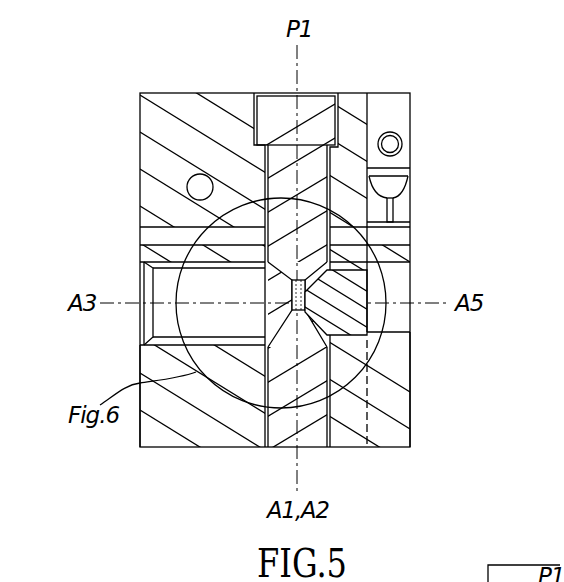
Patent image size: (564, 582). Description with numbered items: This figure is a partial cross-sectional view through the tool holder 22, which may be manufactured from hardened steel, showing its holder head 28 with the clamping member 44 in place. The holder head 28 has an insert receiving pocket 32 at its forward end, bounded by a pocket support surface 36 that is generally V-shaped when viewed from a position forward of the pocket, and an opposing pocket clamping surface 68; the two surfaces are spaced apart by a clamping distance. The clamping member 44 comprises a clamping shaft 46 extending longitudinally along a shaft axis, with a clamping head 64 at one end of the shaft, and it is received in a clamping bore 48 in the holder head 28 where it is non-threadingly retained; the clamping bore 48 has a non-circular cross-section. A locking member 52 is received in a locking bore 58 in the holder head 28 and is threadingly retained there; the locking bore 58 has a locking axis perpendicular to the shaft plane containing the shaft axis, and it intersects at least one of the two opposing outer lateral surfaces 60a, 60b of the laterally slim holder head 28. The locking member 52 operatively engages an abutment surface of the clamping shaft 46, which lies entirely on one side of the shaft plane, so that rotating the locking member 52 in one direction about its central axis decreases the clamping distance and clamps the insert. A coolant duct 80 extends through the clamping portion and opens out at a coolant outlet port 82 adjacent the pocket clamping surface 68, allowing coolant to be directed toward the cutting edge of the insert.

The tool holder 22 is at (424, 90).
The holder head 28 is at (163, 138).
The insert receiving pocket 32 is at (398, 239).
The pocket support surface 36 is at (408, 258).
The clamping member 44 is at (307, 100).
The clamping shaft 46 is at (285, 168).
The clamping bore 48 is at (283, 425).
The locking member 52 is at (347, 320).
The locking bore 58 is at (164, 284).
The outer lateral surface 60a is at (410, 347).
The outer lateral surface 60b is at (140, 362).
The clamping head 64 is at (318, 114).
The pocket clamping surface 68 is at (401, 205).
The coolant duct 80 is at (196, 188).
The coolant outlet port 82 is at (399, 131).